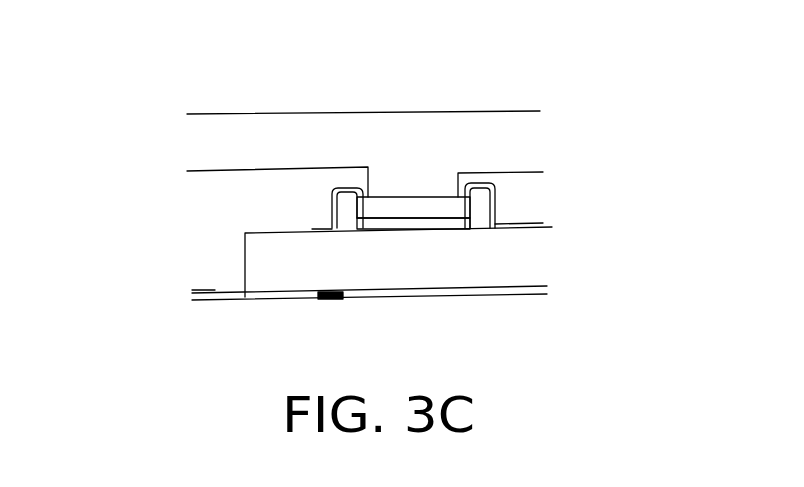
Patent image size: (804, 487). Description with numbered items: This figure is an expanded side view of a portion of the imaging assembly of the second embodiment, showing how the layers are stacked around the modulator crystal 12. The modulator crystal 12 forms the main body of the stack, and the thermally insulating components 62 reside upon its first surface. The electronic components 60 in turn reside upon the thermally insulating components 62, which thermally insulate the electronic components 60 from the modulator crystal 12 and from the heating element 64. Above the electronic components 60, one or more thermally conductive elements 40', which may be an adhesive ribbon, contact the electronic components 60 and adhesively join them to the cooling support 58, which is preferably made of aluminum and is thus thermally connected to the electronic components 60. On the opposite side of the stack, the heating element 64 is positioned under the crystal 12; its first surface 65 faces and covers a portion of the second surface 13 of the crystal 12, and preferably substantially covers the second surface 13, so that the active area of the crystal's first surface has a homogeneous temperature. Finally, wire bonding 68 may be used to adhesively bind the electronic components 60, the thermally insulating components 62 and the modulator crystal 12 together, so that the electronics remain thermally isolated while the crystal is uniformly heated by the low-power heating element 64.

The cooling support 58 is at (290, 135).
The electronic components 60 is at (395, 210).
The thermally conductive elements 40' is at (427, 114).
The wire bonding 68 is at (332, 197).
The thermally insulating components 62 is at (388, 222).
The modulator crystal 12 is at (295, 280).
The first surface 65 is at (210, 292).
The second surface 13 is at (425, 286).
The heating element 64 is at (333, 299).